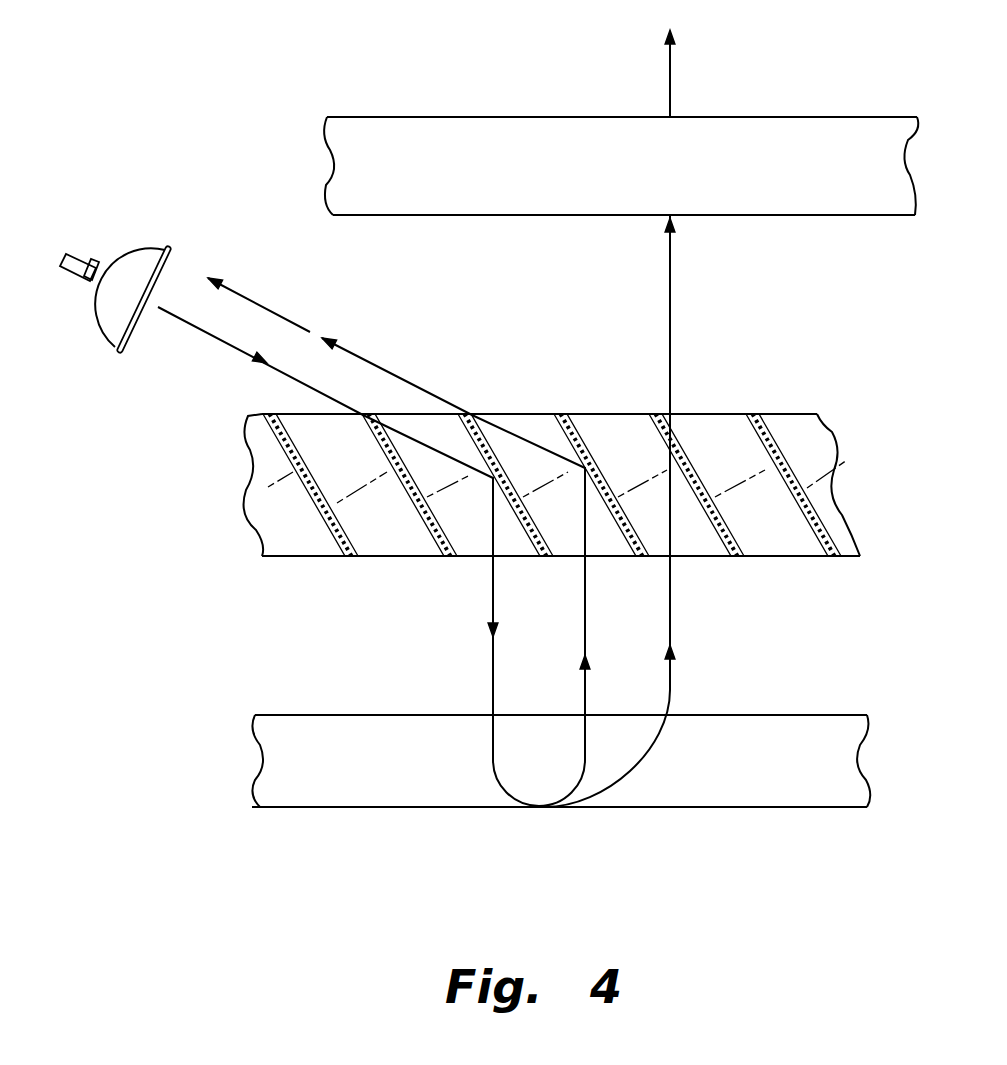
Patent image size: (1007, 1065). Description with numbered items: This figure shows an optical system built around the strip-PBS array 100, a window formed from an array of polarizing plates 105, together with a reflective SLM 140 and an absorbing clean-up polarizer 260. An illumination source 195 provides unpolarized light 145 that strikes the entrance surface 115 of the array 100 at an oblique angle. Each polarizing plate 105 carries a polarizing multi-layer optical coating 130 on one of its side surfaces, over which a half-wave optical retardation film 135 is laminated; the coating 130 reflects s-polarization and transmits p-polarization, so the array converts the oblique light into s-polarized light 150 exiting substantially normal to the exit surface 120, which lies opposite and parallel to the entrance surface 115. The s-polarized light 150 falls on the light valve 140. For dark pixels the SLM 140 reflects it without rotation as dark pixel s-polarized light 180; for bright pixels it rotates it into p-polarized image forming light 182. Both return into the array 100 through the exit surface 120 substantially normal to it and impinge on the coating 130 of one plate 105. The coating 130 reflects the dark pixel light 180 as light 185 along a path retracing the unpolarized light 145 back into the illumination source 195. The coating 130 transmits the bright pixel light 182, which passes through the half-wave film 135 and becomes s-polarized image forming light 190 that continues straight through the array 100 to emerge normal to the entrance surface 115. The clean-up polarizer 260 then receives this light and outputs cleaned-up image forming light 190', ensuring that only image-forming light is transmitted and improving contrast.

The optical structure 100 is at (847, 528).
The polarizing plate 105 is at (530, 420).
The entrance surface 115 is at (792, 412).
The exit surface 120 is at (780, 560).
The polarizing multi-layer optical coating 130 is at (660, 440).
The half-wave optical retardation film 135 is at (687, 457).
The reflective SLM 140 is at (770, 787).
The unpolarized light 145 is at (193, 323).
The s-polarized light 150 is at (495, 590).
The dark pixel s-polarized light 180 is at (590, 695).
The p-polarized image forming light 182 is at (672, 610).
The dark pixel s-polarized light reflected from the PBS coating 185 is at (250, 297).
The s-polarized image forming light 190 is at (694, 385).
The cleaned-up image forming light 190' is at (712, 73).
The illumination source 195 is at (127, 260).
The absorbing clean-up polarizer 260 is at (790, 195).